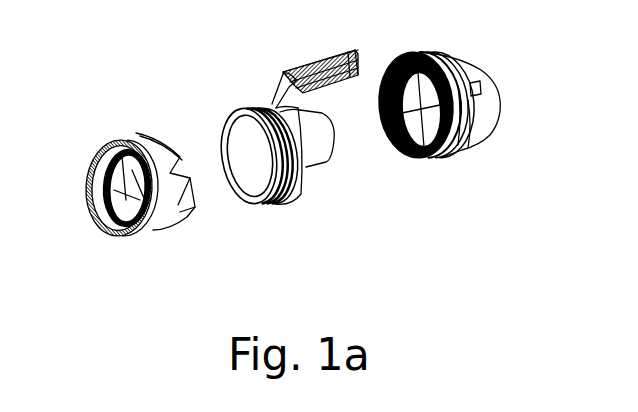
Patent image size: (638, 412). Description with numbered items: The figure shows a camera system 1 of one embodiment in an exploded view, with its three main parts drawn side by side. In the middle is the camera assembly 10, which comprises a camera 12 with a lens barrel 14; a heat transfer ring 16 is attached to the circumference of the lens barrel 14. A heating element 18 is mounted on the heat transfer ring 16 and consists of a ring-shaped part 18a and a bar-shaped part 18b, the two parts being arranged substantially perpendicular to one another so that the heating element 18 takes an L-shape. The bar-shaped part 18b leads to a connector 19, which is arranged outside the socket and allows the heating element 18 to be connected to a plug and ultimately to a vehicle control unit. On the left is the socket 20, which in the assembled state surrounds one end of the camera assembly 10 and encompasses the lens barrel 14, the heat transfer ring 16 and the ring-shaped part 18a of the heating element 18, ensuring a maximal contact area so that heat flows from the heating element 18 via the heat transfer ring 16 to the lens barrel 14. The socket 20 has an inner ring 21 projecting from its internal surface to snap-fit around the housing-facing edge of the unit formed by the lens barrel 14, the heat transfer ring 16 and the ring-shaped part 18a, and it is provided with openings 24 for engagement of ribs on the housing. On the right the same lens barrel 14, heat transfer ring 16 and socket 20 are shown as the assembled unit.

The camera system 1 is at (498, 90).
The camera assembly 10 is at (277, 226).
The camera 12 is at (318, 166).
The lens barrel 14 is at (243, 142).
The heat transfer ring 16 is at (238, 198).
The heating element 18 is at (250, 96).
The ring-shaped part 18a is at (302, 196).
The bar-shaped part 18b is at (276, 82).
The connector 19 is at (334, 49).
The socket 20 is at (146, 237).
The inner ring 21 is at (93, 208).
The openings 24 is at (131, 138).